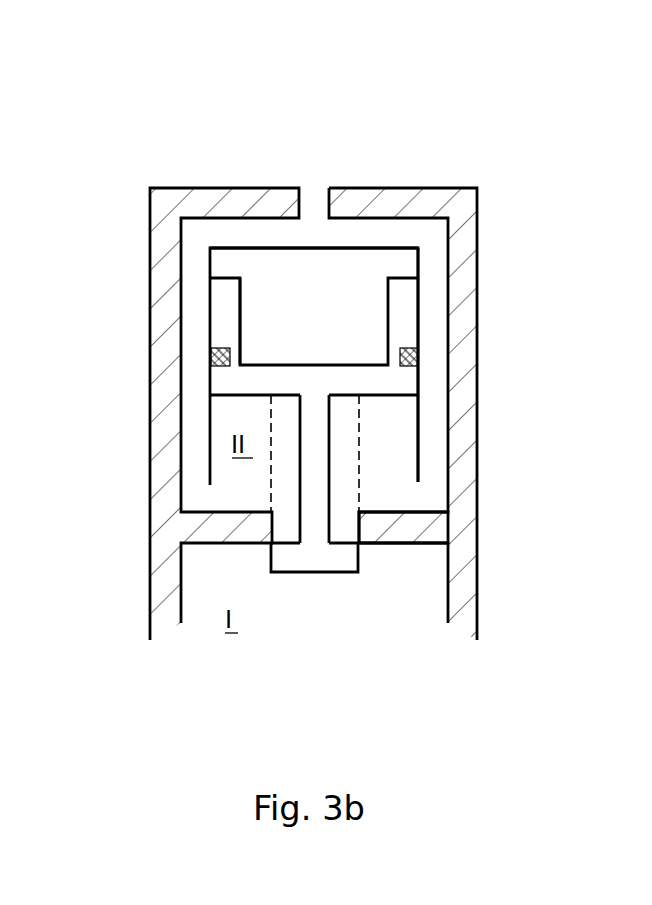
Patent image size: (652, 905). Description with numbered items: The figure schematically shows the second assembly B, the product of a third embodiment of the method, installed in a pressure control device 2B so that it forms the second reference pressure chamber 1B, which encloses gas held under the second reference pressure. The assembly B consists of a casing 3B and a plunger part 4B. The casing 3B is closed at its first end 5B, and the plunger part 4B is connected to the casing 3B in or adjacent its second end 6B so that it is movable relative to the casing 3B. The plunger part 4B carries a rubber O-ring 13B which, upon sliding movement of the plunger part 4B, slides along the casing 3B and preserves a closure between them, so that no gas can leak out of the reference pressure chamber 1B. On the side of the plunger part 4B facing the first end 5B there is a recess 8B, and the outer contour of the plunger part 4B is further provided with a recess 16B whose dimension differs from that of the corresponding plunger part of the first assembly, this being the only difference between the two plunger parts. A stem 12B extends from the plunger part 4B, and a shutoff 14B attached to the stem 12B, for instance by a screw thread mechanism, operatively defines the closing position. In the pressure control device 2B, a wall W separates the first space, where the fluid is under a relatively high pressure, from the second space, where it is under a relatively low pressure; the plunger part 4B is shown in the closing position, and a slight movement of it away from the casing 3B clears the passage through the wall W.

The second reference pressure chamber 1B is at (267, 267).
The pressure control device 2B is at (498, 350).
The casing 3B is at (405, 250).
The plunger part 4B is at (396, 379).
The first end 5B is at (355, 248).
The second end 6B is at (387, 484).
The recess 8B is at (268, 323).
The stem 12B is at (315, 438).
The O-ring 13B is at (212, 357).
The shutoff 14B is at (315, 556).
The recess 16B is at (287, 493).
The second assembly B is at (402, 296).
The wall W is at (425, 528).